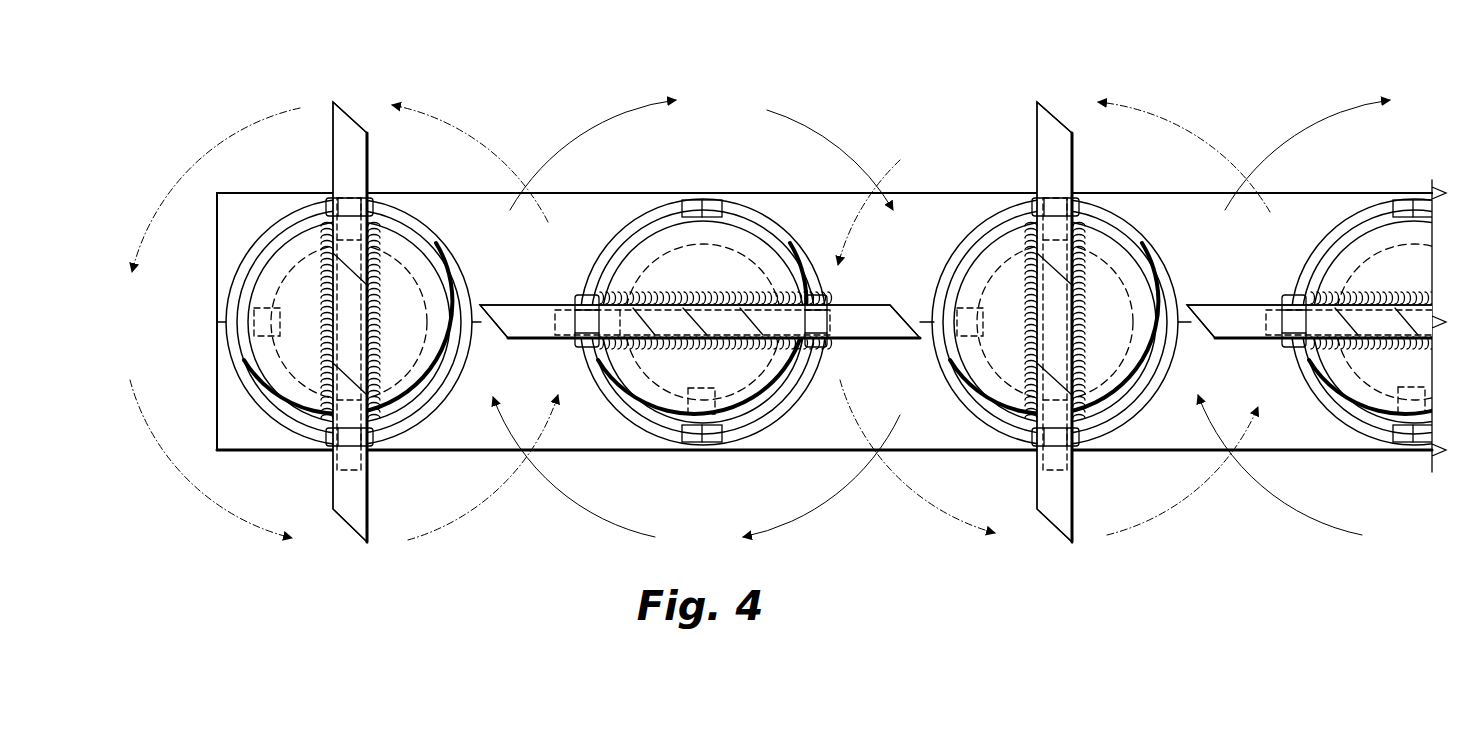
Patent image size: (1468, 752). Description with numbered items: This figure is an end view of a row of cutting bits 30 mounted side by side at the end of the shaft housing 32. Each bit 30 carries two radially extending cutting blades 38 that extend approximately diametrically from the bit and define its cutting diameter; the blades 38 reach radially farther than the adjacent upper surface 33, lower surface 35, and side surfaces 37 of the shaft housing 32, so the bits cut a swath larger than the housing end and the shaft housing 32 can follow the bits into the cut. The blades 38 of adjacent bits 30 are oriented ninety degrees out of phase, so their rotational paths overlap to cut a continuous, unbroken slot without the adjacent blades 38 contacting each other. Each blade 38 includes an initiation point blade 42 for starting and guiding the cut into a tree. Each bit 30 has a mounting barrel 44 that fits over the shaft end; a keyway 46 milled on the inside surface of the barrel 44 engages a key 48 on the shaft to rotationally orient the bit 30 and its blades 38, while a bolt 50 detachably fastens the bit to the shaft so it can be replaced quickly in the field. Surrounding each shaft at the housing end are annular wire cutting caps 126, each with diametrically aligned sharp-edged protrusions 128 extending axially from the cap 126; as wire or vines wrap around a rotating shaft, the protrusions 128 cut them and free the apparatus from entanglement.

The cutting bit 30 is at (383, 182).
The shaft housing 32 is at (932, 437).
The upper surface 33 is at (752, 190).
The lower surface 35 is at (815, 468).
The side surfaces 37 is at (218, 265).
The cutting blades 38 is at (338, 118).
The initiation point blade 42 is at (348, 342).
The mounting barrel 44 is at (770, 257).
The keyway 46 is at (716, 399).
The key 48 is at (690, 390).
The bolt 50 is at (577, 340).
The wire cutting caps 126 is at (417, 413).
The sharp-edged protrusion 128 is at (690, 208).